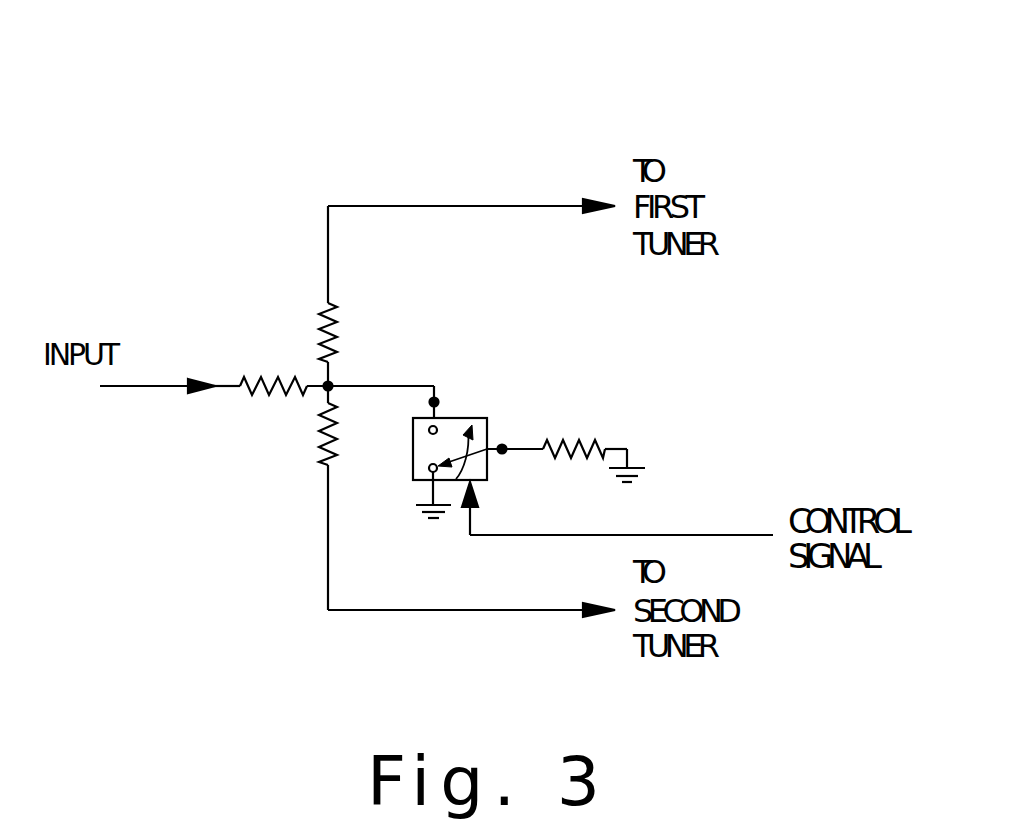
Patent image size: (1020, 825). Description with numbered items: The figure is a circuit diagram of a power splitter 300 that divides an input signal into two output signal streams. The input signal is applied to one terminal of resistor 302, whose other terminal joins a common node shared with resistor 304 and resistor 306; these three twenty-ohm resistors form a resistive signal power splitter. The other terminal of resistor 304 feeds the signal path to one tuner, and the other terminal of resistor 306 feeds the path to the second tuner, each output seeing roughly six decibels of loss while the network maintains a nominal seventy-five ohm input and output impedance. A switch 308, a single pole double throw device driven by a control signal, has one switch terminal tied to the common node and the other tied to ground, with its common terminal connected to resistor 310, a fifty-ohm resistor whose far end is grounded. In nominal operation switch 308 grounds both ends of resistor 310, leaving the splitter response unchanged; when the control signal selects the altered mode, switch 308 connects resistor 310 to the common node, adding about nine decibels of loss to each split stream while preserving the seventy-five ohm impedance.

The power splitter 300 is at (148, 112).
The resistor 302 is at (281, 379).
The resistor 304 is at (340, 338).
The resistor 306 is at (318, 430).
The switch 308 is at (470, 418).
The resistor 310 is at (580, 446).